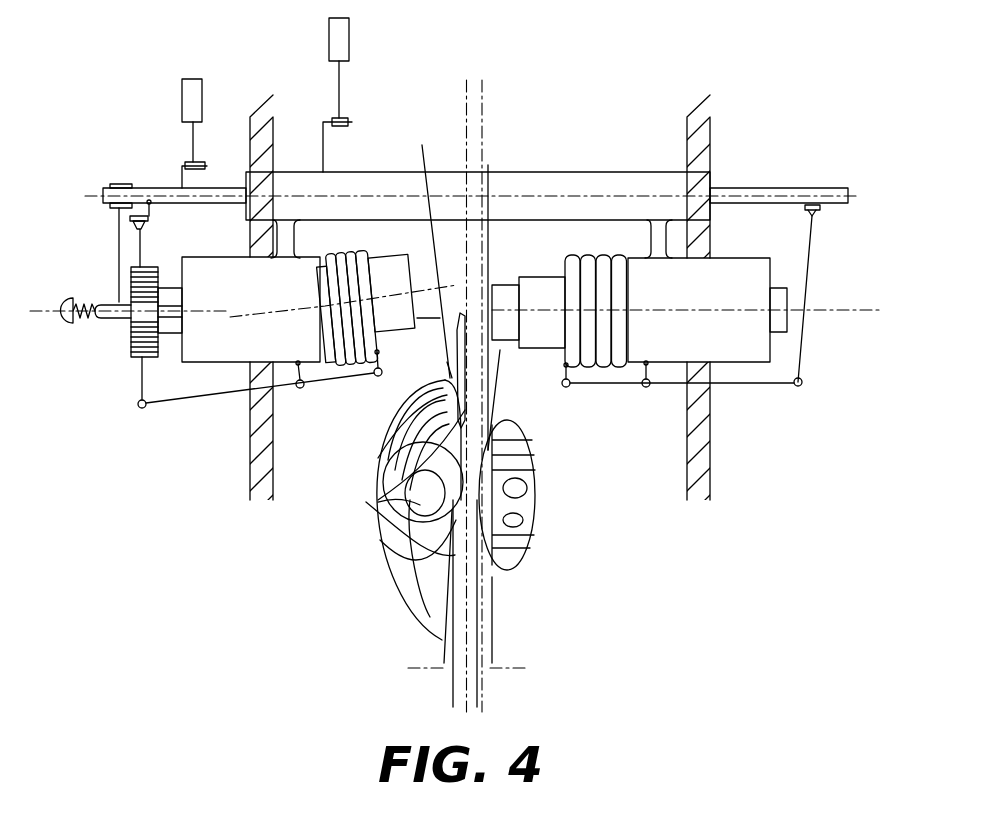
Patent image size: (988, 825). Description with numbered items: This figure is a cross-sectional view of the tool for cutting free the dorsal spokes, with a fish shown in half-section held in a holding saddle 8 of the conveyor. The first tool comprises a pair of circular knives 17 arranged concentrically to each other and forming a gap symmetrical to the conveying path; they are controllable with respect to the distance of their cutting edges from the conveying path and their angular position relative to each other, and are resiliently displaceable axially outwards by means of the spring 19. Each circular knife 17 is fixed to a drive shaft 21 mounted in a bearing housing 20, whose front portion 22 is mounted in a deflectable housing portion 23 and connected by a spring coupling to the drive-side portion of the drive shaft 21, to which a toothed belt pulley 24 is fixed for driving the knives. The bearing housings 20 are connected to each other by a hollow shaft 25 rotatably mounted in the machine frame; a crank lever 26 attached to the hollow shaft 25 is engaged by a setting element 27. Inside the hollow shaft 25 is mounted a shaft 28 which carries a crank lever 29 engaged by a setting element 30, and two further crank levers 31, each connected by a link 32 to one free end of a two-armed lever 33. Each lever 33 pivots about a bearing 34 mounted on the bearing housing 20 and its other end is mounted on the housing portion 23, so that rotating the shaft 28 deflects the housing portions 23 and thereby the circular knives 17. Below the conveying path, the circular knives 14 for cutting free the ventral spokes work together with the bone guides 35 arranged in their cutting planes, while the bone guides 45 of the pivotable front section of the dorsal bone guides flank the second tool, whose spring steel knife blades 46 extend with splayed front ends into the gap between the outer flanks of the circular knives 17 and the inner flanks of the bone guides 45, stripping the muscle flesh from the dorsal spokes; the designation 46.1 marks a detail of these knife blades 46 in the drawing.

The holding saddle 8 is at (407, 584).
The circular knives 14 is at (453, 679).
The circular knives 17 is at (430, 155).
The spring 19 is at (93, 319).
The bearing housing 20 is at (237, 339).
The drive shaft 21 is at (163, 299).
The front portion 22 is at (430, 319).
The deflectable housing portion 23 is at (393, 279).
The toothed belt pulley 24 is at (140, 361).
The hollow shaft 25 is at (534, 177).
The crank lever 26 is at (322, 141).
The setting element 27 is at (349, 38).
The shaft 28 is at (214, 188).
The crank lever 29 is at (182, 175).
The setting element 30 is at (200, 93).
The crank levers 31 is at (152, 203).
The link 32 is at (122, 244).
The two-armed lever 33 is at (187, 402).
The bearing 34 is at (300, 389).
The bone guides 35 is at (445, 644).
The bone guides 45 is at (447, 362).
The knife blades 46 is at (378, 503).
The blade tip 46.1 is at (378, 459).